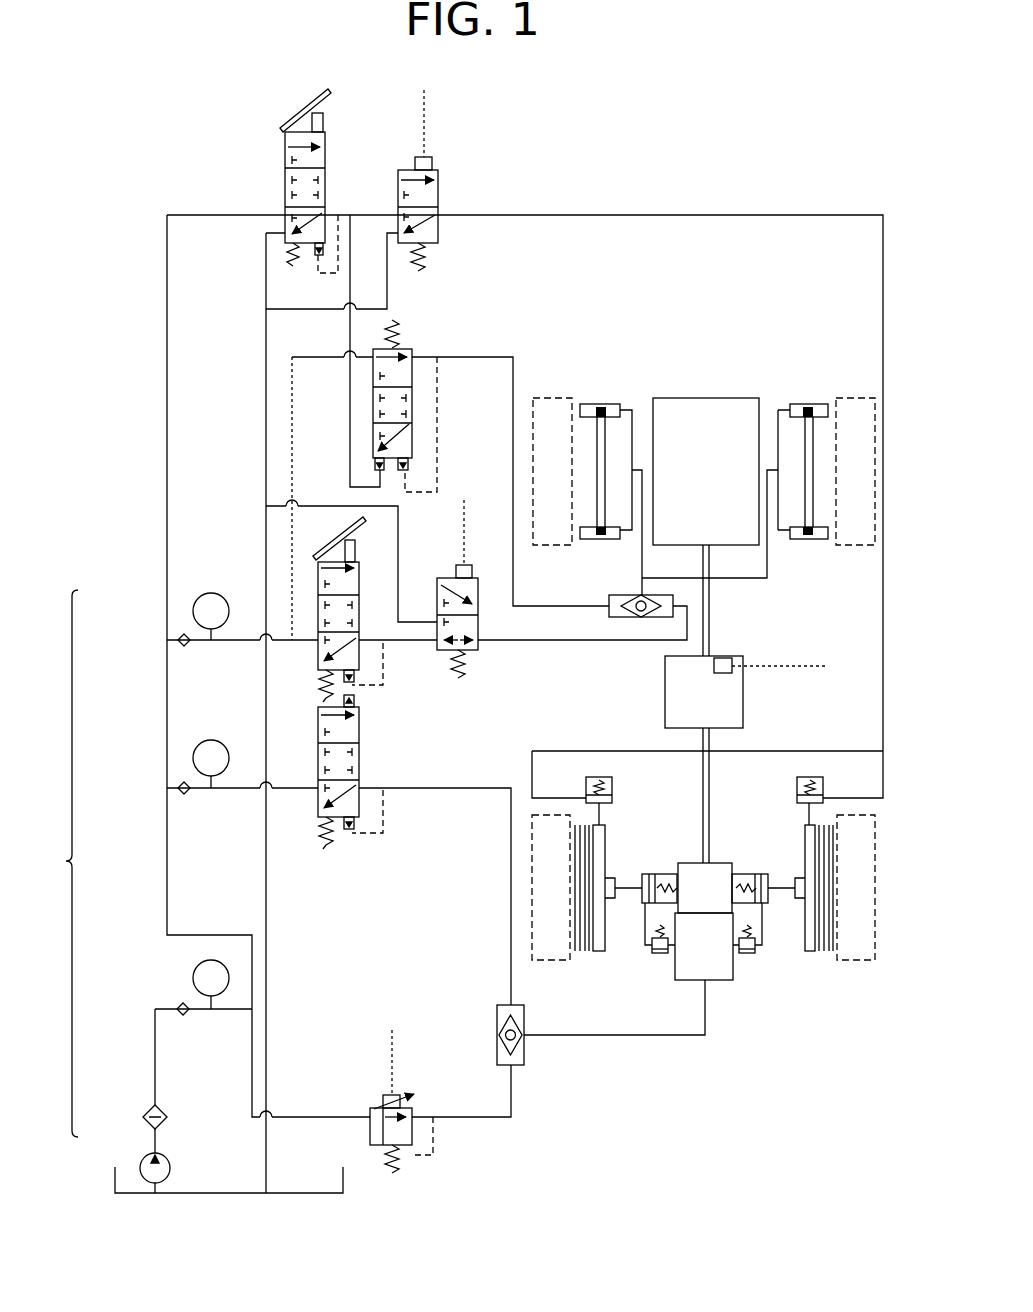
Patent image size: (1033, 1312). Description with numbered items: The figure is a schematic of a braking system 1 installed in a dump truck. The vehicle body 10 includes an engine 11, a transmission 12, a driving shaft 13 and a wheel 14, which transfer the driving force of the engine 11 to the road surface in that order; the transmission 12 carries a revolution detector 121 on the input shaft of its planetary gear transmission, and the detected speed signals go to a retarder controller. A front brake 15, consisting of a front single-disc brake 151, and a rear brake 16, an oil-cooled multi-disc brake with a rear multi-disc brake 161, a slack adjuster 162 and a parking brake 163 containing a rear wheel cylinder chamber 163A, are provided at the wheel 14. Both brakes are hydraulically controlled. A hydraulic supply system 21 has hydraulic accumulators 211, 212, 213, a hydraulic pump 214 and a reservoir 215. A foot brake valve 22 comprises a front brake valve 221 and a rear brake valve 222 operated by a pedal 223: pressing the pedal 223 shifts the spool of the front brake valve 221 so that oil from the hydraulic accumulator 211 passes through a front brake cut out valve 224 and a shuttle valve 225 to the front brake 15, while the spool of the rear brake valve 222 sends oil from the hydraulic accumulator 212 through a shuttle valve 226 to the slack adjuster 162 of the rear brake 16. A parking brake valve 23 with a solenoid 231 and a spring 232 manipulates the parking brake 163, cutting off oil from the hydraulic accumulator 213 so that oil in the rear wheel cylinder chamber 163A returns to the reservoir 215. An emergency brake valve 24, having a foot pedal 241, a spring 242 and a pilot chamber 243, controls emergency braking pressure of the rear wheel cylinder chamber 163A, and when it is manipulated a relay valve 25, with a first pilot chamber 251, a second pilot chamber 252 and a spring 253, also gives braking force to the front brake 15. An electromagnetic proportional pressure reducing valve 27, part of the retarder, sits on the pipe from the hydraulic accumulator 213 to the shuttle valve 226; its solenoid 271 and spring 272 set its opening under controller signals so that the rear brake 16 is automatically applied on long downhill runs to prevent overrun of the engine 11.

The braking system 1 is at (812, 195).
The vehicle body 10 is at (703, 659).
The engine 11 is at (702, 398).
The transmission 12 is at (744, 712).
The revolution detector 121 is at (729, 658).
The driving shaft 13 is at (710, 828).
The wheel 14 is at (550, 398).
The front brake 15 is at (601, 540).
The front single-disc brake 151 is at (600, 404).
The rear brake 16 is at (606, 850).
The rear multi-disc brake 161 is at (599, 952).
The slack adjuster 162 is at (656, 962).
The parking brake 163 is at (613, 778).
The rear wheel cylinder chamber 163A is at (612, 800).
The hydraulic supply system 21 is at (58, 863).
The hydraulic accumulator 211 is at (193, 612).
The hydraulic accumulator 212 is at (193, 759).
The hydraulic accumulator 213 is at (193, 977).
The hydraulic pump 214 is at (142, 1114).
The reservoir 215 is at (104, 1170).
The foot brake valve 22 is at (318, 681).
The front brake valve 221 is at (318, 590).
The rear brake valve 222 is at (318, 738).
The pedal 223 is at (328, 545).
The front brake cut out valve 224 is at (476, 660).
The shuttle valve 225 is at (616, 618).
The shuttle valve 226 is at (496, 1020).
The parking brake valve 23 is at (440, 194).
The solenoid 231 is at (433, 162).
The spring 232 is at (426, 264).
The emergency brake valve 24 is at (326, 152).
The foot pedal 241 is at (292, 125).
The spring 242 is at (296, 256).
The pilot chamber 243 is at (318, 258).
The relay valve 25 is at (414, 382).
The first pilot chamber 251 is at (374, 466).
The second pilot chamber 252 is at (410, 468).
The spring 253 is at (398, 328).
The electromagnetic proportional pressure reducing valve 27 is at (414, 1133).
The solenoid 271 is at (383, 1103).
The spring 272 is at (397, 1176).